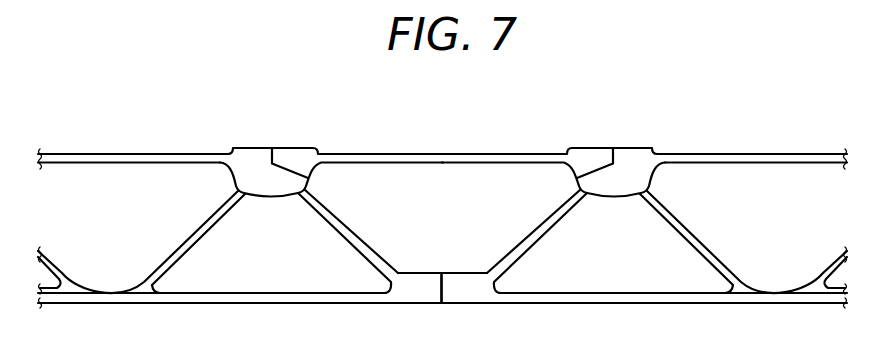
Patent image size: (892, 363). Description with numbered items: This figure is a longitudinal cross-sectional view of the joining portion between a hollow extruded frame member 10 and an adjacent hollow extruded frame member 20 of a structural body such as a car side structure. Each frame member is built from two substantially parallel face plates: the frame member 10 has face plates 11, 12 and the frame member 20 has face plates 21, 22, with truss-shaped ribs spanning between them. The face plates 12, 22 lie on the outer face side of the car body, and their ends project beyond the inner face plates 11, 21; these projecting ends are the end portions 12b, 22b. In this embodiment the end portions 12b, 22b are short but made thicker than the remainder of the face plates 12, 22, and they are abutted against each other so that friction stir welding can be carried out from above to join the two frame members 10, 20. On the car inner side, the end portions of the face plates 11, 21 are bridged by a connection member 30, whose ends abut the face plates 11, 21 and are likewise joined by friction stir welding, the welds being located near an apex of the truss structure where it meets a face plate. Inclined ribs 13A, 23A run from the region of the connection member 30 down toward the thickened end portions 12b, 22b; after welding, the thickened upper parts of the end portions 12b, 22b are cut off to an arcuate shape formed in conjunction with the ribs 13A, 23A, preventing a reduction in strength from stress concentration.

The hollow extruded frame member 10 is at (222, 126).
The face plate 11 is at (125, 154).
The face plate 12 is at (238, 300).
The end portion of face plate 12b is at (418, 290).
The rib 13A is at (338, 218).
The hollow extruded frame member 20 is at (686, 130).
The face plate 21 is at (766, 156).
The face plate 22 is at (590, 300).
The end portion of face plate 22b is at (467, 295).
The rib 23A is at (541, 222).
The connection member 30 is at (441, 134).